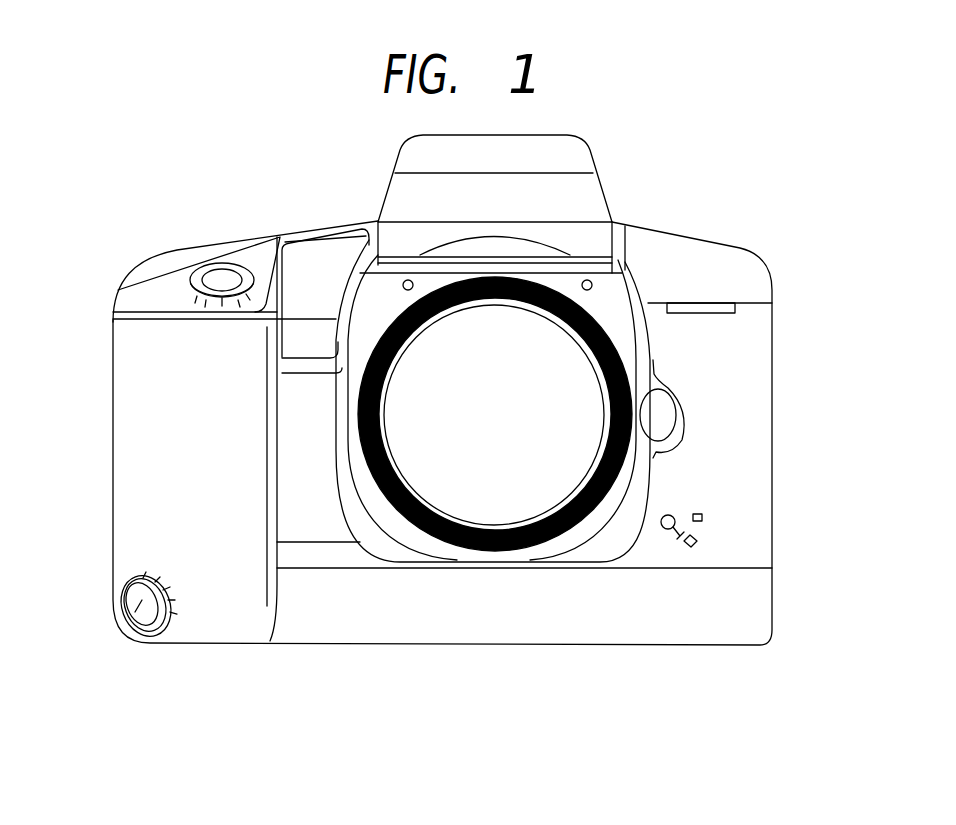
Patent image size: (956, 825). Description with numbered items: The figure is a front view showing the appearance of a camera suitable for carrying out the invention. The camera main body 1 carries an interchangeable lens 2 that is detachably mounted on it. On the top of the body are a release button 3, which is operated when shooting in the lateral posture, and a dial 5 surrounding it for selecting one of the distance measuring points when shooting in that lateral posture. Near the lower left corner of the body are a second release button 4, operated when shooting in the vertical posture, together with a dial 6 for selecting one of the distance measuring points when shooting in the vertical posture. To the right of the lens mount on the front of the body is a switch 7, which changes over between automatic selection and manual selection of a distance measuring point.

The camera main body 1 is at (712, 262).
The interchangeable lens 2 is at (540, 337).
The release button 3 is at (220, 277).
The release button 4 is at (130, 634).
The dial 5 is at (247, 274).
The dial 6 is at (150, 641).
The switch 7 is at (663, 520).